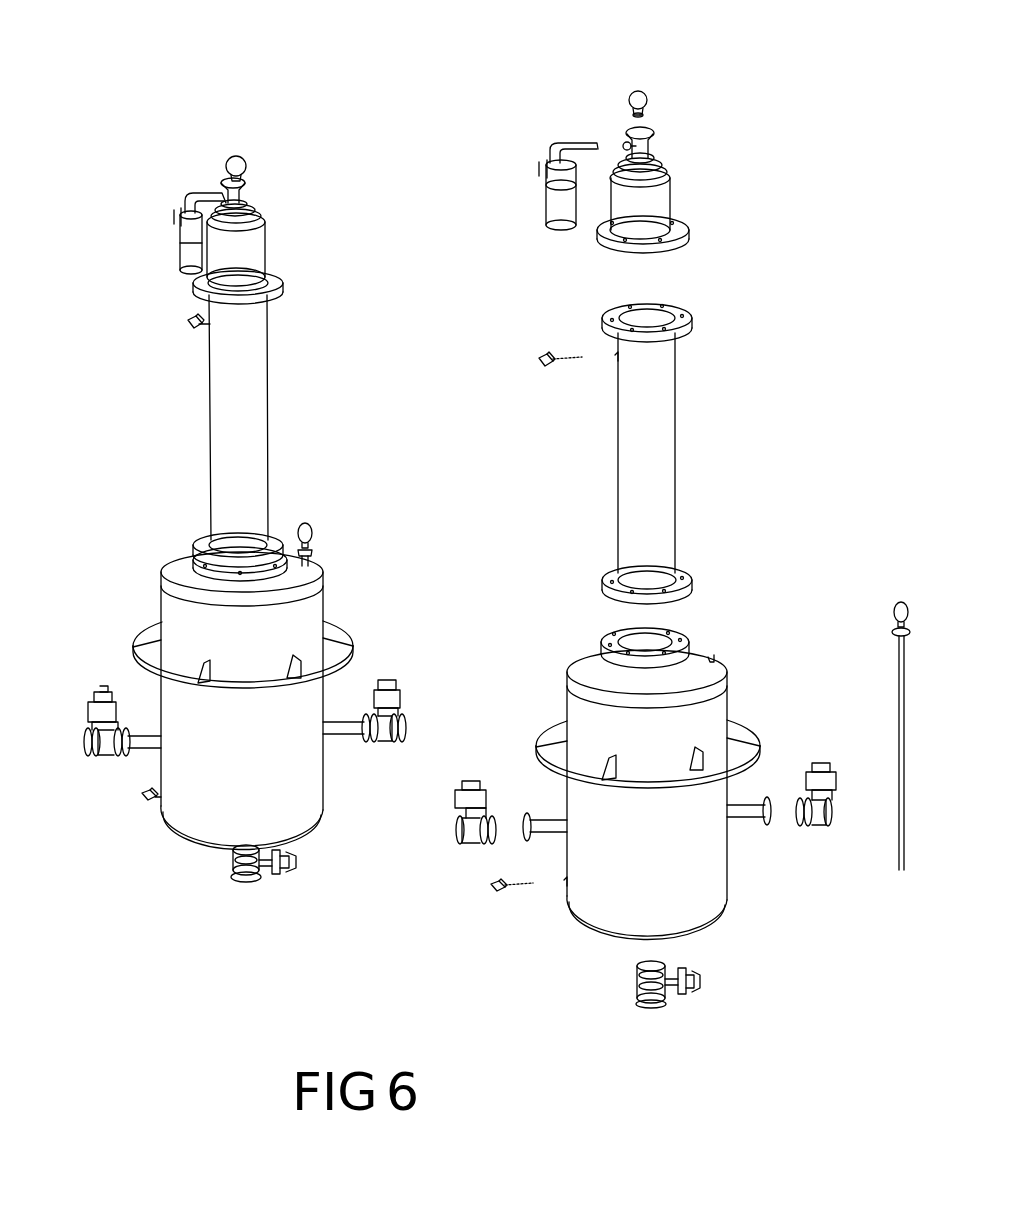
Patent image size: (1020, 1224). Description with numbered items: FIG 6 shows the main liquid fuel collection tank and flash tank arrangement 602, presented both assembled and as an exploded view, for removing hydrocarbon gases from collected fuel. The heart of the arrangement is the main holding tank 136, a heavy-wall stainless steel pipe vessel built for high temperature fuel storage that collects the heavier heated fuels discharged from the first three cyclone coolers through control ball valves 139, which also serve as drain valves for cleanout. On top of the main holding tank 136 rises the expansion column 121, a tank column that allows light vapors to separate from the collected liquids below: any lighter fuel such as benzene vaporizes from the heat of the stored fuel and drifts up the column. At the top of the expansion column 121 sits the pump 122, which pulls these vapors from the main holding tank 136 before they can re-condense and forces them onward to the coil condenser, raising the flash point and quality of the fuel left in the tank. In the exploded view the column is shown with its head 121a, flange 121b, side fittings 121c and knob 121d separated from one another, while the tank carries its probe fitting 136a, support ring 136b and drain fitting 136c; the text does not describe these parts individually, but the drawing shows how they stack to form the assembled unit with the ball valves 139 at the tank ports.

The exploded view of heat exchanger assembly 602 is at (604, 78).
The expansion column 121 is at (243, 417).
The head unit on column 121a is at (251, 247).
The column flange 121b is at (694, 327).
The column fitting 121c is at (196, 328).
The knob / ball on head 121d is at (247, 165).
The pump 122 is at (181, 238).
The main holding tank 136 is at (173, 617).
The probe / sensor fitting 136a is at (317, 531).
The support ring flange 136b is at (343, 618).
The drain fitting 136c is at (138, 801).
The control ball valves 139 is at (83, 700).